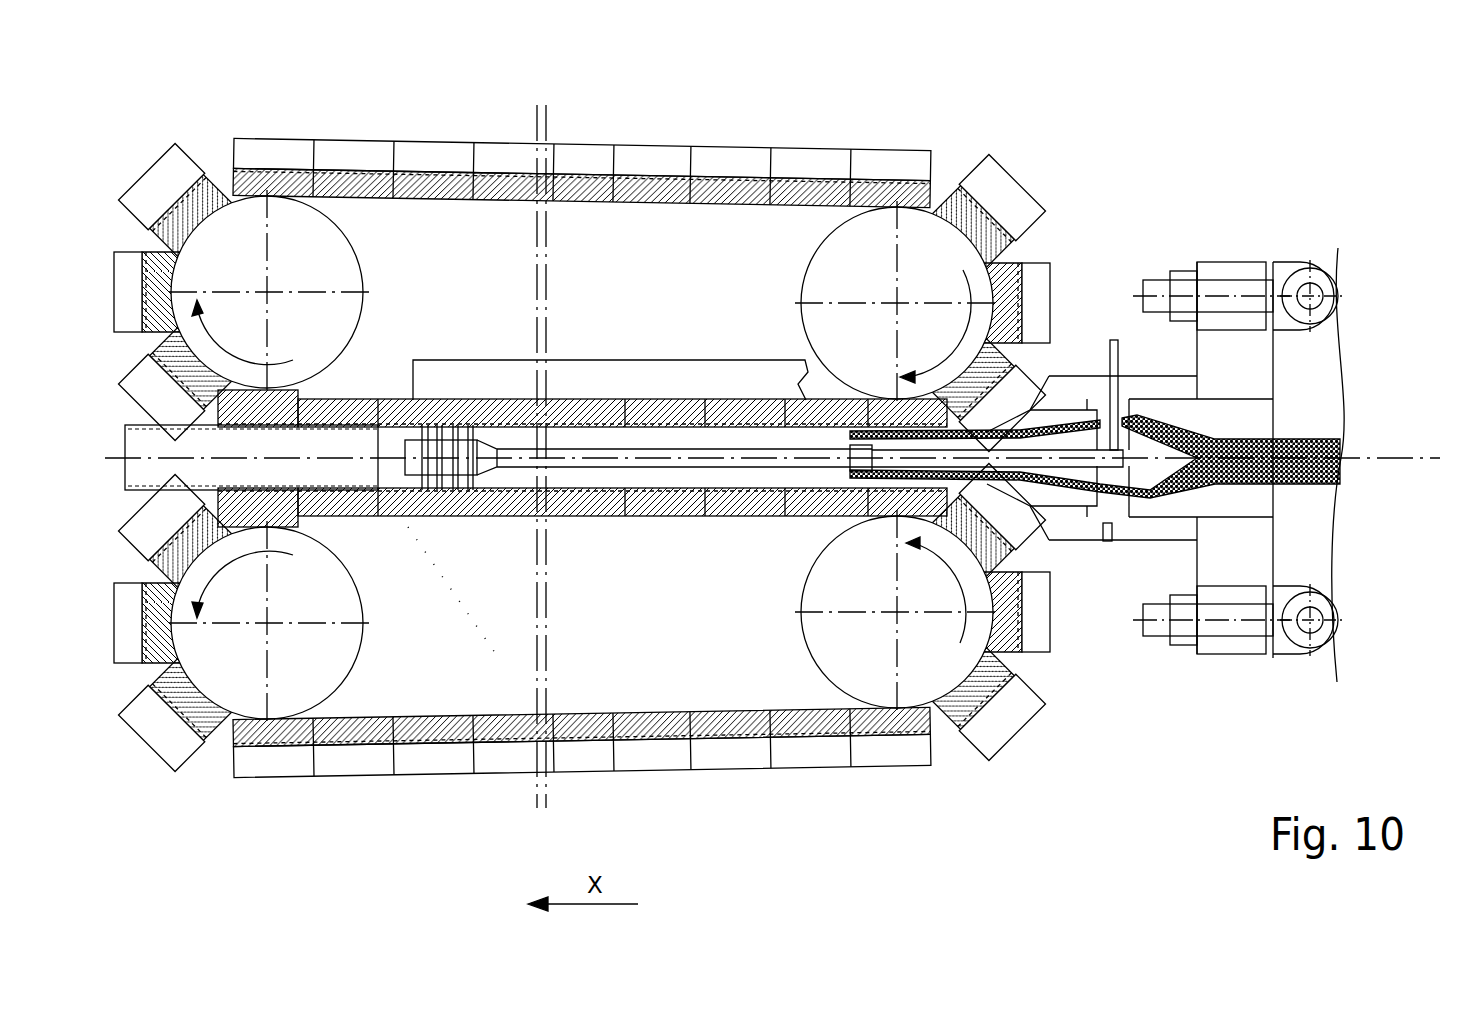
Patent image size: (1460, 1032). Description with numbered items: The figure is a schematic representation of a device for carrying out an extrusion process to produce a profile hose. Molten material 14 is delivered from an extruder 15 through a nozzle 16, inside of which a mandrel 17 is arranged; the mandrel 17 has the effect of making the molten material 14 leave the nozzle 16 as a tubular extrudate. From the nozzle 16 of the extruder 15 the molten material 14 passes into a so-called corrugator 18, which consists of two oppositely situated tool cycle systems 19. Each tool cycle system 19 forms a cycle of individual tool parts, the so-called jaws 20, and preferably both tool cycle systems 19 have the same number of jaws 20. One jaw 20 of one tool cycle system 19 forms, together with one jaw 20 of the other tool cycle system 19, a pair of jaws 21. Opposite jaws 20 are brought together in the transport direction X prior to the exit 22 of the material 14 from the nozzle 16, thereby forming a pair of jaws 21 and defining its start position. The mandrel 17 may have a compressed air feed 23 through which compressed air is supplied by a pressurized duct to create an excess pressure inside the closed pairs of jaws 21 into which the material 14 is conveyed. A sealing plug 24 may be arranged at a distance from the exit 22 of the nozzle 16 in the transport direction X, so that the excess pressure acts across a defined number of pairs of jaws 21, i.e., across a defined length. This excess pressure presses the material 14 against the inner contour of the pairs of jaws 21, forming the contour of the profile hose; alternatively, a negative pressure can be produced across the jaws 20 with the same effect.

The molten material 14 is at (1350, 478).
The extruder 15 is at (1322, 367).
The nozzle 16 is at (1080, 525).
The mandrel 17 is at (1145, 454).
The corrugator 18 is at (760, 464).
The tool cycle system 19 is at (146, 137).
The jaw 20 is at (882, 160).
The pair of jaws 21 is at (763, 503).
The exit 22 is at (820, 425).
The compressed air feed 23 is at (1113, 340).
The sealing plug 24 is at (413, 398).